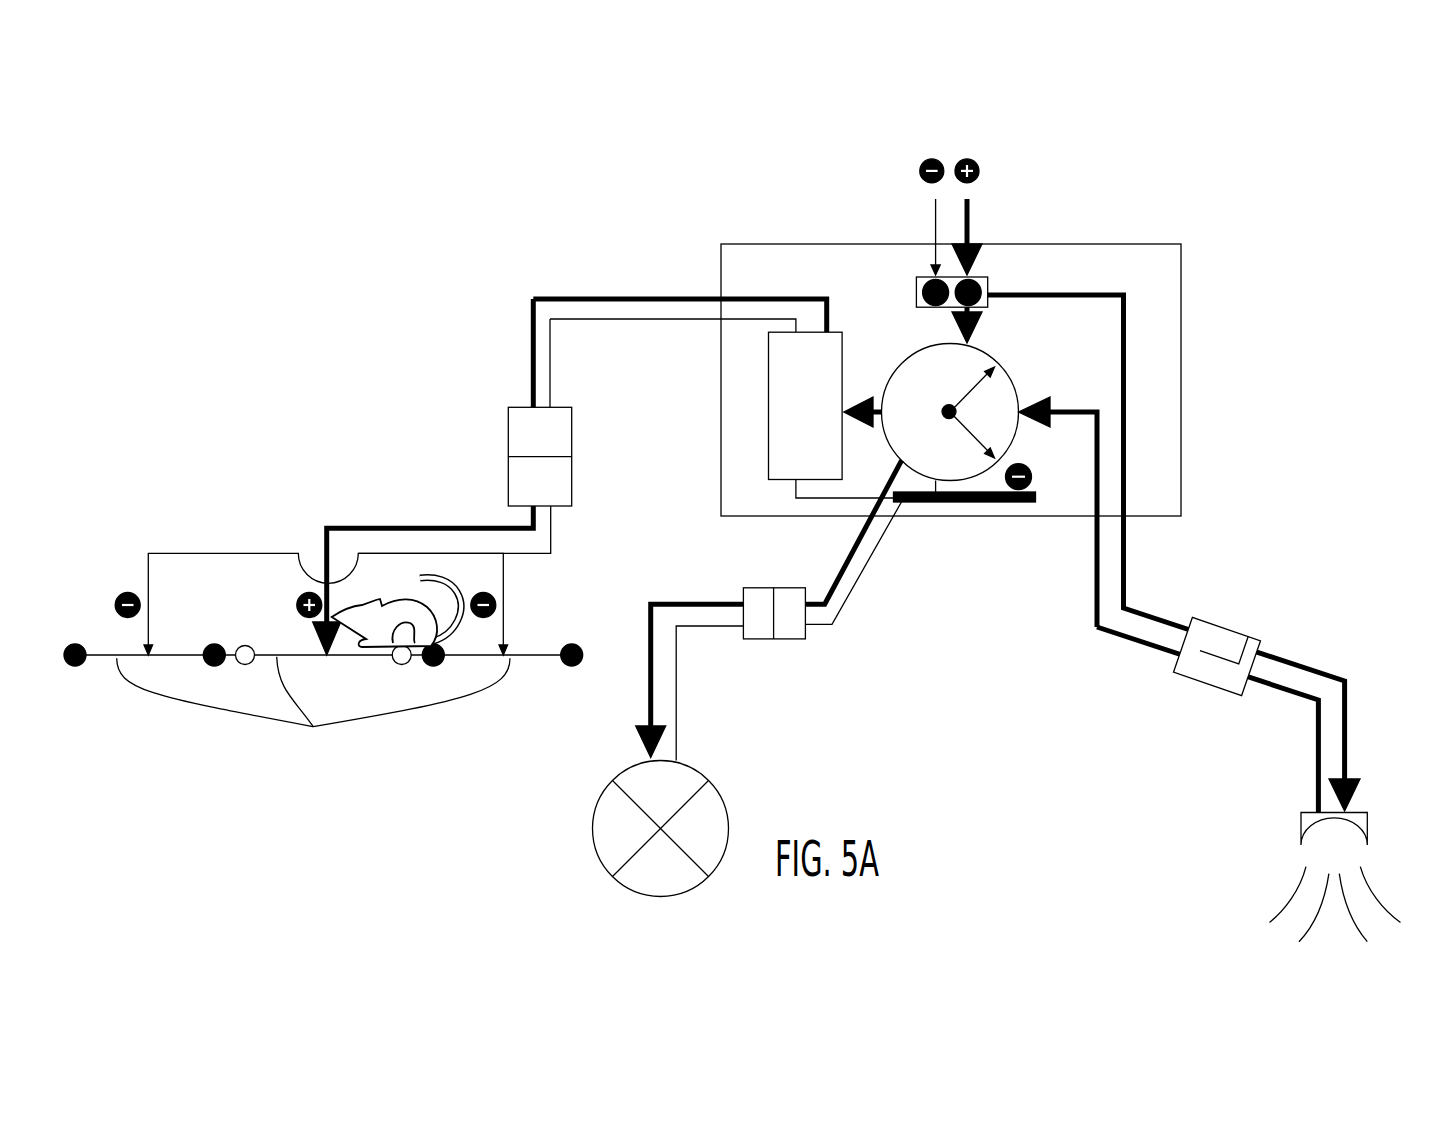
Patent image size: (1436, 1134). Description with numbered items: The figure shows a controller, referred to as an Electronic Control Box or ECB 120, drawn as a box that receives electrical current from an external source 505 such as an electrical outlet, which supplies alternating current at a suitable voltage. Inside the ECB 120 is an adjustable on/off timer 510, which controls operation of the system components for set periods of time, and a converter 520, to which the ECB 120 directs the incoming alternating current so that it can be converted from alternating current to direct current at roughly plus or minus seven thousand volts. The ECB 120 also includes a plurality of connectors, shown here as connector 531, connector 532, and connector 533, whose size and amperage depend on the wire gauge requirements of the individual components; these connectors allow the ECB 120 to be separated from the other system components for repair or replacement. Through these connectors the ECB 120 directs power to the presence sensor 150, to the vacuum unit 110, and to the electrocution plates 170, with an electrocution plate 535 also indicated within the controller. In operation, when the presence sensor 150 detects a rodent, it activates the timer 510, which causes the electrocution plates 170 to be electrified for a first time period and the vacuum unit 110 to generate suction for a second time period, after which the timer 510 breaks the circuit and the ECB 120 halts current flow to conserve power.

The external source 505 is at (979, 168).
The Electronic Control Box 120 is at (1258, 183).
The converter 520 is at (768, 394).
The adjustable on/off timer 510 is at (998, 360).
The connector 533 is at (508, 445).
The electrocution plate 535 is at (953, 516).
The connector 531 is at (1249, 640).
The connector 532 is at (774, 639).
The vacuum unit 110 is at (592, 840).
The presence sensor 150 is at (1369, 832).
The electrocution plates 170 is at (323, 670).